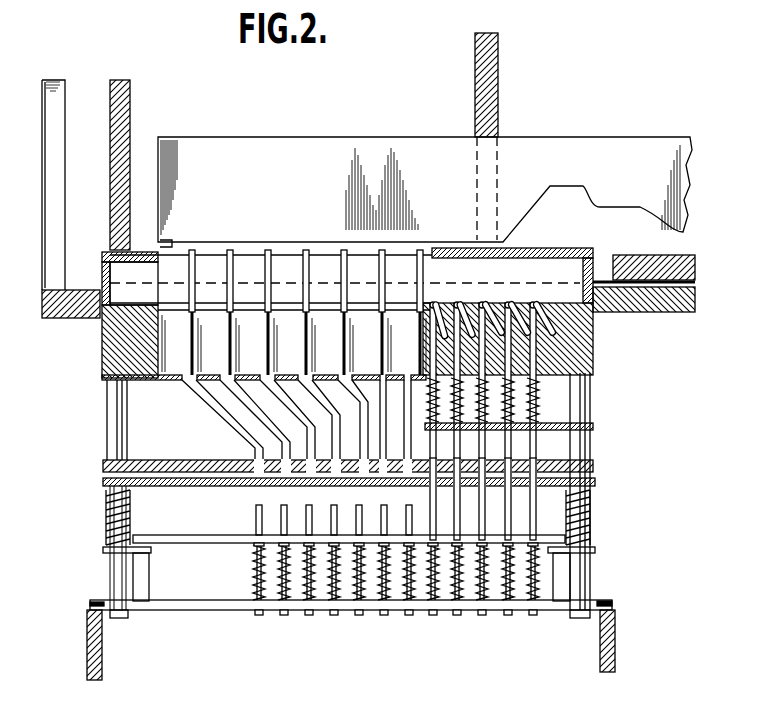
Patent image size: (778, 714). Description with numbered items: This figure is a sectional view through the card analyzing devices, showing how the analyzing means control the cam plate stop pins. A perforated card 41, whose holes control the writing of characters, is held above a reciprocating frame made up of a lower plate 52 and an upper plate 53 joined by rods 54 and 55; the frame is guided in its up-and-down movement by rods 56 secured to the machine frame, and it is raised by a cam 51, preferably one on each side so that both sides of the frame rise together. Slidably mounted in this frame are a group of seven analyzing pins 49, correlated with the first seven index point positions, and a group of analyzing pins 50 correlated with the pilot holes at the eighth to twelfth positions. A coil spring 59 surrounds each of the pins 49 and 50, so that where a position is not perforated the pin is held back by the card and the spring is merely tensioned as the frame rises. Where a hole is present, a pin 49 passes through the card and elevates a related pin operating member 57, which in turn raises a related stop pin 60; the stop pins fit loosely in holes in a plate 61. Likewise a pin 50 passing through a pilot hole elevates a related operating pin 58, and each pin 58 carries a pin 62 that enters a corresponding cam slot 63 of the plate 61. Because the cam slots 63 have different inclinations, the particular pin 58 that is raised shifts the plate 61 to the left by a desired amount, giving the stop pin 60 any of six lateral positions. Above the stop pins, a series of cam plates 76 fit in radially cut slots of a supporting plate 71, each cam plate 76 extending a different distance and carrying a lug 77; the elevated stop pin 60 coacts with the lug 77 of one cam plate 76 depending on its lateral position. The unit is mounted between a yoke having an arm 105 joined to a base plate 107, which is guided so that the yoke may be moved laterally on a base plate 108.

The card 41 is at (550, 460).
The analyzing pins 49 is at (257, 512).
The analyzing pins 50 is at (482, 493).
The cam 51 is at (102, 653).
The lower plate 52 is at (205, 605).
The upper plate 53 is at (225, 539).
The rod 54 is at (144, 577).
The rod 55 is at (558, 567).
The guide rods 56 is at (108, 578).
The pin operating member 57 is at (298, 420).
The operating pin 58 is at (540, 437).
The coil spring 59 is at (256, 585).
The stop pin 60 is at (231, 252).
The plate 61 is at (283, 270).
The pin 62 is at (533, 301).
The cam slot 63 is at (490, 266).
The supporting plate 71 is at (476, 92).
The cam plate 76 is at (311, 143).
The lug 77 is at (181, 249).
The arm 105 is at (131, 108).
The base plate 107 is at (682, 257).
The base plate 108 is at (72, 310).